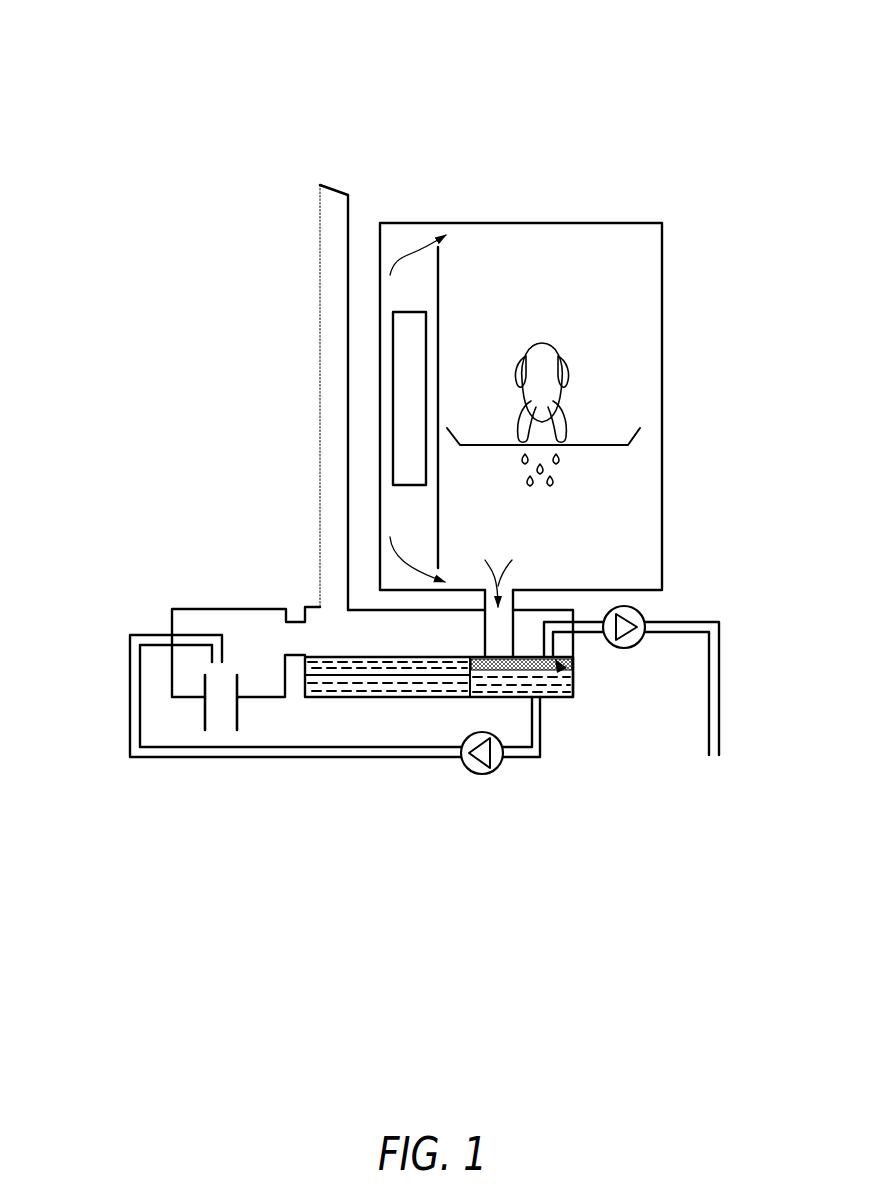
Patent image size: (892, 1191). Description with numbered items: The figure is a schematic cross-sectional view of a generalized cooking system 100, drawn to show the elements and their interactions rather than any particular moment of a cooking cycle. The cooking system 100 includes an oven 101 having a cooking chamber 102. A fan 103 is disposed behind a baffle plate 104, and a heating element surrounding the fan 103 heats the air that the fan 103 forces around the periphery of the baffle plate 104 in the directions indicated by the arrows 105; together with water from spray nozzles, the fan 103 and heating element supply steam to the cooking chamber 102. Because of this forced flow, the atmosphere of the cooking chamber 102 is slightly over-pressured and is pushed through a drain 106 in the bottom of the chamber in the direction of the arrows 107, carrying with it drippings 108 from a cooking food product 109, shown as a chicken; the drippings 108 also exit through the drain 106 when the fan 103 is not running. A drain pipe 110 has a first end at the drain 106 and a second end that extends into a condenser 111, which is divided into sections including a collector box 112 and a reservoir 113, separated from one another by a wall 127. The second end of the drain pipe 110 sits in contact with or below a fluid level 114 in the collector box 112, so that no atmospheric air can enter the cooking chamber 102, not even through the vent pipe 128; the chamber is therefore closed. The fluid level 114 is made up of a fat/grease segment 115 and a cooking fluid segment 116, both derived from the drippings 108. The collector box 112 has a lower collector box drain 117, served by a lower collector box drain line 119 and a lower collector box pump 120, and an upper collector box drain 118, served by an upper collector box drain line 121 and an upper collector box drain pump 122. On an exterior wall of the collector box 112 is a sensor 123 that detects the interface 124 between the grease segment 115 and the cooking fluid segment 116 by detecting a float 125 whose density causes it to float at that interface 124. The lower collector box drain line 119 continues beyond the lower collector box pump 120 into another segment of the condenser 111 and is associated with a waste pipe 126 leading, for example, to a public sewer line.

The cooking system 100 is at (406, 115).
The oven 101 is at (523, 223).
The cooking chamber 102 is at (608, 265).
The fan 103 is at (413, 415).
The baffle plate 104 is at (438, 280).
The arrows 105 is at (408, 256).
The drain 106 is at (505, 592).
The arrows 107 is at (485, 560).
The drippings 108 is at (573, 467).
The cooking food product 109 is at (557, 366).
The drain pipe 110 is at (525, 608).
The condenser 111 is at (235, 609).
The collector box 112 is at (553, 698).
The reservoir 113 is at (333, 698).
The fluid level 114 is at (590, 614).
The fat/grease segment 115 is at (573, 660).
The cooking fluid segment 116 is at (488, 680).
The lower collector box drain 117 is at (510, 760).
The upper collector box drain 118 is at (556, 632).
The lower collector box drain line 119 is at (130, 720).
The lower collector box pump 120 is at (463, 768).
The upper collector box drain line 121 is at (704, 622).
The upper collector box drain pump 122 is at (646, 636).
The sensor 123 is at (573, 690).
The interface 124 is at (521, 685).
The float 125 is at (565, 697).
The waste pipe 126 is at (200, 720).
The wall 127 is at (490, 668).
The vent pipe 128 is at (335, 288).